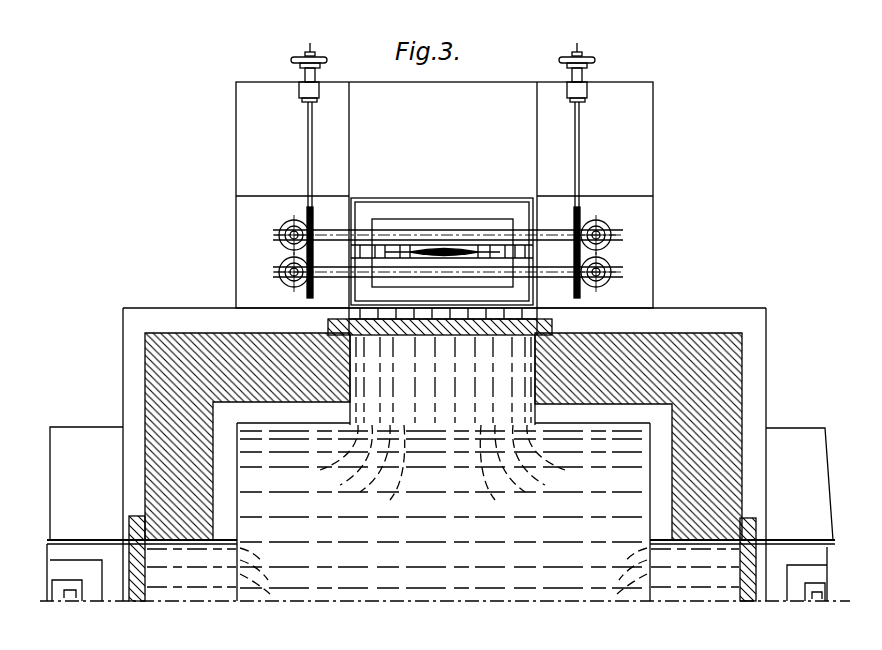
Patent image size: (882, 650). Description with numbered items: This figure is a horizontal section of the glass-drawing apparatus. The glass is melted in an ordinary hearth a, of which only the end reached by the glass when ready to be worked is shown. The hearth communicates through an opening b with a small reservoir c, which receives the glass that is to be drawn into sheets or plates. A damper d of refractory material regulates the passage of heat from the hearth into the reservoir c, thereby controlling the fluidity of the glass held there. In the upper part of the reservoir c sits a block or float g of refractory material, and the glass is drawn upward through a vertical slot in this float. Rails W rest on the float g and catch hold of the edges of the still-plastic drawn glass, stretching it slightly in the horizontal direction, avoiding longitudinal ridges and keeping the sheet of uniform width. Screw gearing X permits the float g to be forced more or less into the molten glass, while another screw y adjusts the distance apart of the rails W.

The hearth a is at (418, 531).
The opening b is at (469, 392).
The reservoir c is at (441, 204).
The damper d is at (440, 330).
The block or float g is at (441, 212).
The rails W is at (543, 233).
The screw gearing X is at (613, 224).
The screw y is at (445, 170).